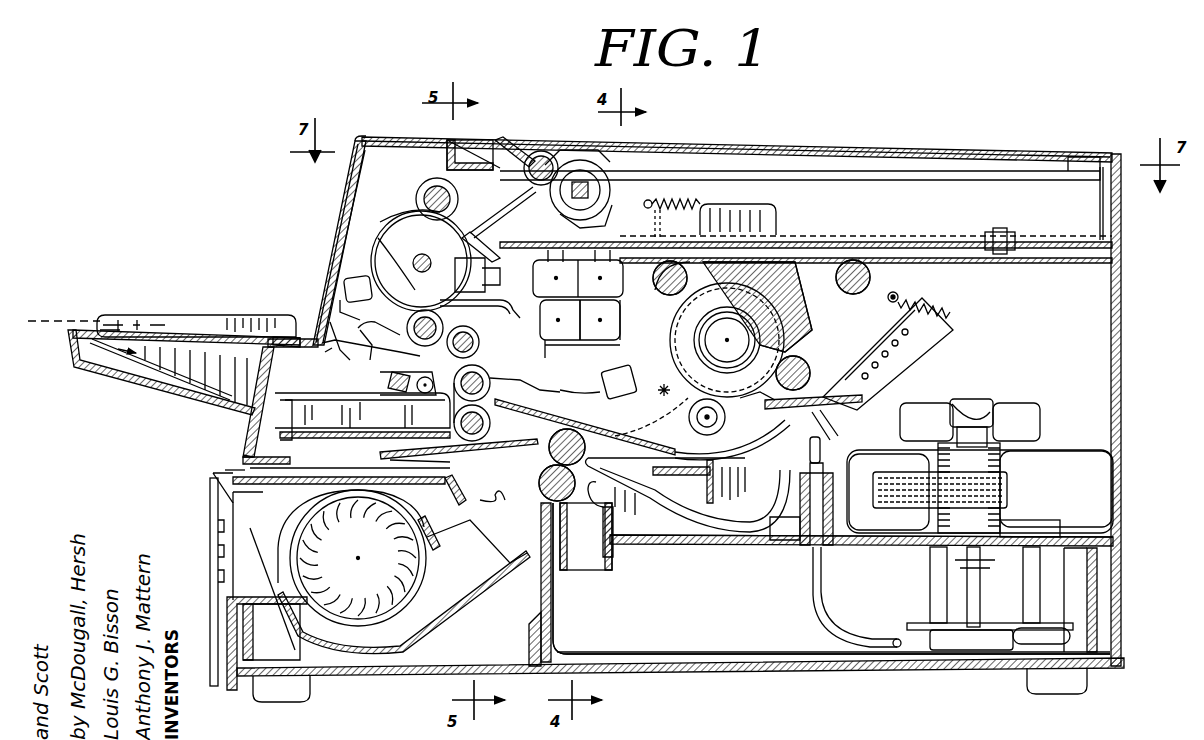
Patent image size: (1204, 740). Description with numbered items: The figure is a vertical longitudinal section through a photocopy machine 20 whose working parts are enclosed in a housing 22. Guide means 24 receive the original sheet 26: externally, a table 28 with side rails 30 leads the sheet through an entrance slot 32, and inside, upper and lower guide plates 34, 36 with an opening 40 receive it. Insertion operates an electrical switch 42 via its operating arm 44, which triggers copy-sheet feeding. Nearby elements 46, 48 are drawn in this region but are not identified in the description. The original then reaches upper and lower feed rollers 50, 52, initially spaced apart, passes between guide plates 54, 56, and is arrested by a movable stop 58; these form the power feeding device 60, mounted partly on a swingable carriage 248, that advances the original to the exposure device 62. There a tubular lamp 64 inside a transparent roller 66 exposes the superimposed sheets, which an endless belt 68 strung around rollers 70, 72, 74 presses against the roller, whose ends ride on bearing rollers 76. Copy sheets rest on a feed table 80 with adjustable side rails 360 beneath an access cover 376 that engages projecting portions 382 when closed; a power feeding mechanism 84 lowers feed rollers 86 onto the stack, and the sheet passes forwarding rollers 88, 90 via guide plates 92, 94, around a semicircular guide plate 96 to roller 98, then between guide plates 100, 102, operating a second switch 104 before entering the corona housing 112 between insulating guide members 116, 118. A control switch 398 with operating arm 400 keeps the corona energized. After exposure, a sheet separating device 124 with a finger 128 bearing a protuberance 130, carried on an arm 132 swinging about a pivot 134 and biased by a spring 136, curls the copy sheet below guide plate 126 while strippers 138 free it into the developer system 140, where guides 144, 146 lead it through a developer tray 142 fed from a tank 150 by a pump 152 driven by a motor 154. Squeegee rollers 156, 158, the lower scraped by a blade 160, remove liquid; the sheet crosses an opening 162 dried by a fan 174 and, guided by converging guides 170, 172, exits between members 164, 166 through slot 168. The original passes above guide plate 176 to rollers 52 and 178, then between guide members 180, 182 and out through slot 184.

The photocopy machine 20 is at (180, 186).
The housing 22 is at (346, 180).
The guide means 24 is at (252, 306).
The original sheet 26 is at (46, 320).
The table or platform 28 is at (178, 316).
The side rails or flanges 30 is at (126, 316).
The entrance slot 32 is at (318, 340).
The upper guide plate 34 is at (330, 322).
The lower guide plate 36 is at (328, 356).
The slot or opening 40 is at (320, 343).
The electrical switch 42 is at (359, 277).
The operating arm 44 is at (364, 356).
The feed roller 46 is at (410, 328).
The feed arm 48 is at (392, 340).
The upper feed roller 50 is at (480, 340).
The lower feed roller 52 is at (488, 358).
The upper guide plate 54 is at (582, 343).
The lower guide plate 56 is at (609, 382).
The movable stop 58 is at (575, 386).
The power feeding device 60 is at (383, 382).
The exposure device 62 is at (764, 262).
The tubular lamp 64 is at (738, 286).
The transparent roller 66 is at (757, 403).
The endless belt 68 is at (759, 307).
The belt roller 70 is at (690, 278).
The belt roller 72 is at (808, 351).
The belt roller 74 is at (871, 272).
The bearing rollers 76 is at (726, 418).
The feed table 80 is at (822, 242).
The power feeding mechanism 84 is at (638, 165).
The feed rollers 86 is at (611, 190).
The forwarding roller 88 is at (430, 185).
The forwarding roller 90 is at (378, 238).
The upper guide plate 92 is at (492, 198).
The lower guide plate 94 is at (482, 232).
The semicircular guide plate 96 is at (380, 222).
The forwarding roller 98 is at (421, 261).
The upper guide plate 100 is at (490, 292).
The lower guide plate 102 is at (492, 318).
The second electrical switch 104 is at (448, 252).
The corona housing 112 is at (578, 271).
The upper guide member 116 is at (580, 311).
The lower guide member 118 is at (600, 320).
The sheet separating device 124 is at (830, 422).
The guide plate 126 is at (690, 442).
The finger or blade 128 is at (828, 425).
The protuberance or bump 130 is at (727, 345).
The arm 132 is at (902, 375).
The pivot 134 is at (898, 294).
The spring 136 is at (942, 308).
The strippers 138 is at (800, 485).
The developer system 140 is at (632, 458).
The developer tray 142 is at (658, 546).
The upper guide 144 is at (698, 480).
The lower guide 146 is at (655, 505).
The tank 150 is at (545, 585).
The pump 152 is at (935, 622).
The motor 154 is at (1010, 488).
The upper squeegee roller 156 is at (549, 452).
The lower squeegee roller 158 is at (539, 481).
The rubber squeegee blade 160 is at (598, 464).
The opening 162 is at (500, 501).
The upper guide member 164 is at (246, 455).
The lower guide member 166 is at (348, 468).
The slot 168 is at (250, 466).
The upper converging guide 170 is at (478, 460).
The lower converging guide 172 is at (478, 512).
The fan 174 is at (343, 553).
The guide plate 176 is at (610, 415).
The forwarding roller 178 is at (490, 426).
The upper guide member 180 is at (346, 420).
The lower guide member 182 is at (320, 400).
The slot 184 is at (70, 340).
The carriage or frame 248 is at (365, 421).
The side rails 360 is at (748, 212).
The access cover 376 is at (752, 148).
The upwardly projecting portions 382 is at (519, 140).
The control switch 398 is at (651, 417).
The operating arm 400 is at (651, 382).